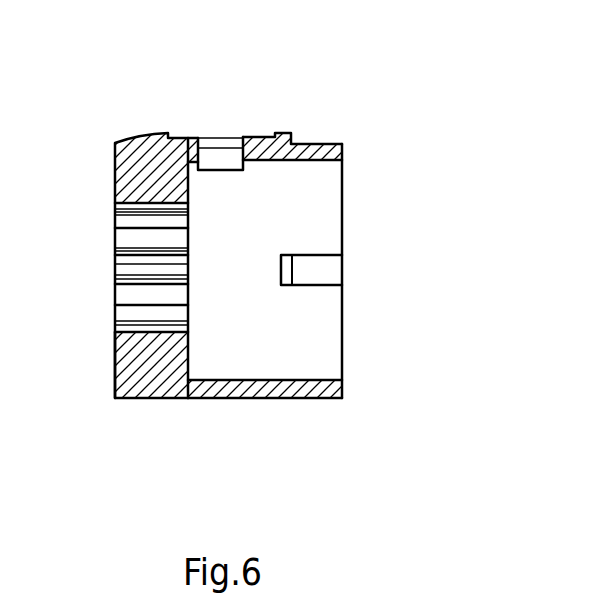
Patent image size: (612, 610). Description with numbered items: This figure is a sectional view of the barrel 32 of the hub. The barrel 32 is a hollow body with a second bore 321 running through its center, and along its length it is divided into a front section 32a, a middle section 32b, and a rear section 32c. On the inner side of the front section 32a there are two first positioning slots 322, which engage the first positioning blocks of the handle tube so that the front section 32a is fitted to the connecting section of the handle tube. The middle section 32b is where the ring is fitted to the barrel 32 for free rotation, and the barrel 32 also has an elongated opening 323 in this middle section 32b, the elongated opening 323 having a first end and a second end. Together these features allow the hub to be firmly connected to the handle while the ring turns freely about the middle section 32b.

The barrel 32 is at (142, 137).
The front section 32a is at (312, 370).
The middle section 32b is at (235, 370).
The rear section 32c is at (152, 376).
The second bore 321 is at (300, 183).
The first positioning slot 322 is at (312, 265).
The elongated opening 323 is at (220, 158).